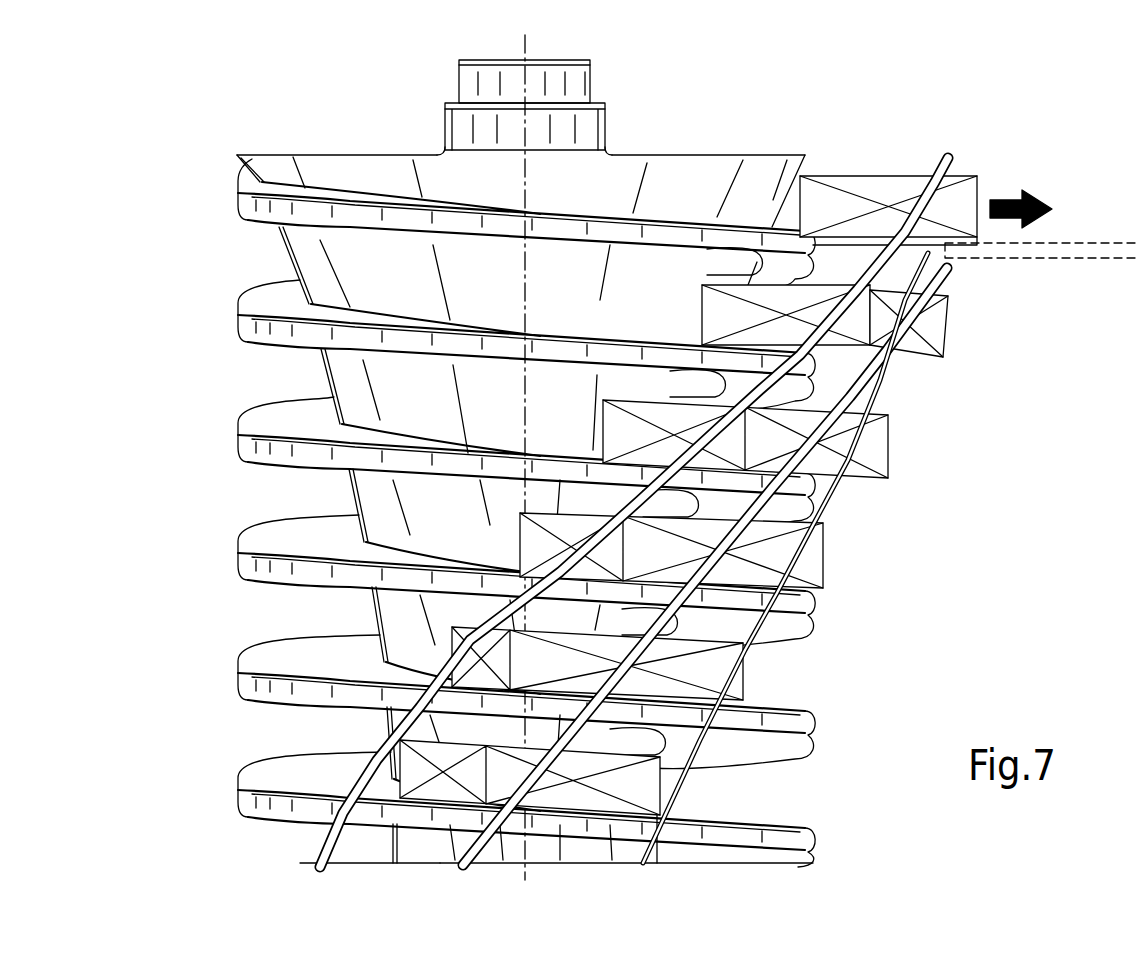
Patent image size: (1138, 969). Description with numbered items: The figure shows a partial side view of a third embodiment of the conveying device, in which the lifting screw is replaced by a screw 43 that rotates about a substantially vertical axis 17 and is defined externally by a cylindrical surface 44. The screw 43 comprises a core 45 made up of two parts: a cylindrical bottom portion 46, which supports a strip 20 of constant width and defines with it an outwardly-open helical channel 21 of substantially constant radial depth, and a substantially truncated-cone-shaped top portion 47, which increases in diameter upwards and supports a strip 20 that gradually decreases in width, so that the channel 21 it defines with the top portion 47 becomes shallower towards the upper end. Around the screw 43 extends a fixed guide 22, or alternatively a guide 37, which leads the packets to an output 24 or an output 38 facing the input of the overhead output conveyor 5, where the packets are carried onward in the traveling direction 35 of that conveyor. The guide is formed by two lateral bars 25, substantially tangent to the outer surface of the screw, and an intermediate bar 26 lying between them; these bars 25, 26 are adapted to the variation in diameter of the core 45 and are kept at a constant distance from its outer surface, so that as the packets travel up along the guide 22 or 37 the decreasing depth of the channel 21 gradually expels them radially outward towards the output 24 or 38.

The output conveyor 5 is at (1046, 266).
The vertical axis 17 is at (525, 868).
The strip 20 is at (722, 835).
The helical channel 21 is at (733, 744).
The fixed guide 22 is at (693, 550).
The output 24 is at (928, 180).
The lateral bars 25 is at (760, 630).
The intermediate bar 26 is at (747, 690).
The traveling direction 35 is at (1020, 196).
The guide 37 is at (693, 550).
The output 38 is at (980, 192).
The screw 43 is at (520, 532).
The cylindrical surface 44 is at (814, 616).
The core 45 is at (421, 865).
The cylindrical bottom portion 46 is at (548, 857).
The truncated-cone-shaped top portion 47 is at (677, 187).